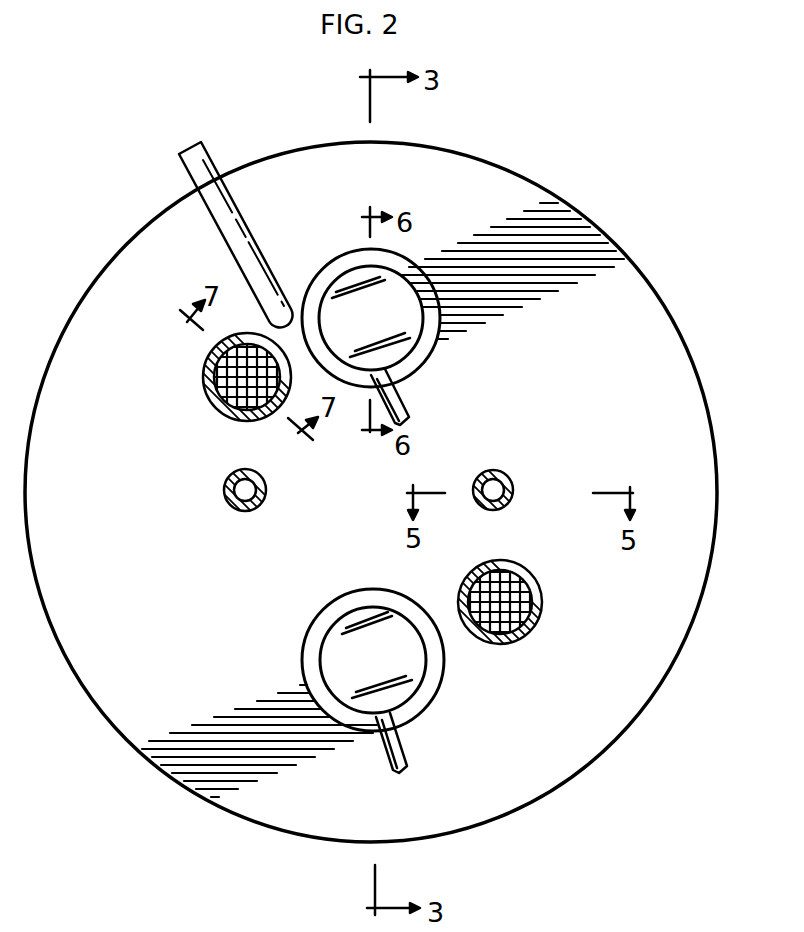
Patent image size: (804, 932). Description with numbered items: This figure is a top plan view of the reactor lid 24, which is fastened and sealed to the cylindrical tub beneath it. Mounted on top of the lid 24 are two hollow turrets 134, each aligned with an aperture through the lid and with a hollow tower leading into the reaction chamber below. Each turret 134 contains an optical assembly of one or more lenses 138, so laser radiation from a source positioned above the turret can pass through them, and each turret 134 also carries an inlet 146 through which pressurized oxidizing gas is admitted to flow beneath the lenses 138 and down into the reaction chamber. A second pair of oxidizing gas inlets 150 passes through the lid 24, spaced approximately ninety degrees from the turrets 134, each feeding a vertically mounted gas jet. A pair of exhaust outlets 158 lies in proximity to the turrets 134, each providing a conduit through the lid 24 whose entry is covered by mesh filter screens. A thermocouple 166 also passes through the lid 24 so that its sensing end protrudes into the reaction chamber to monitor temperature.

The lid 24 is at (104, 553).
The hollow turret 134 is at (318, 285).
The lens 138 is at (396, 335).
The inlet 146 is at (400, 400).
The oxidizing gas inlet 150 is at (224, 494).
The exhaust outlet 158 is at (205, 388).
The thermocouple 166 is at (190, 172).